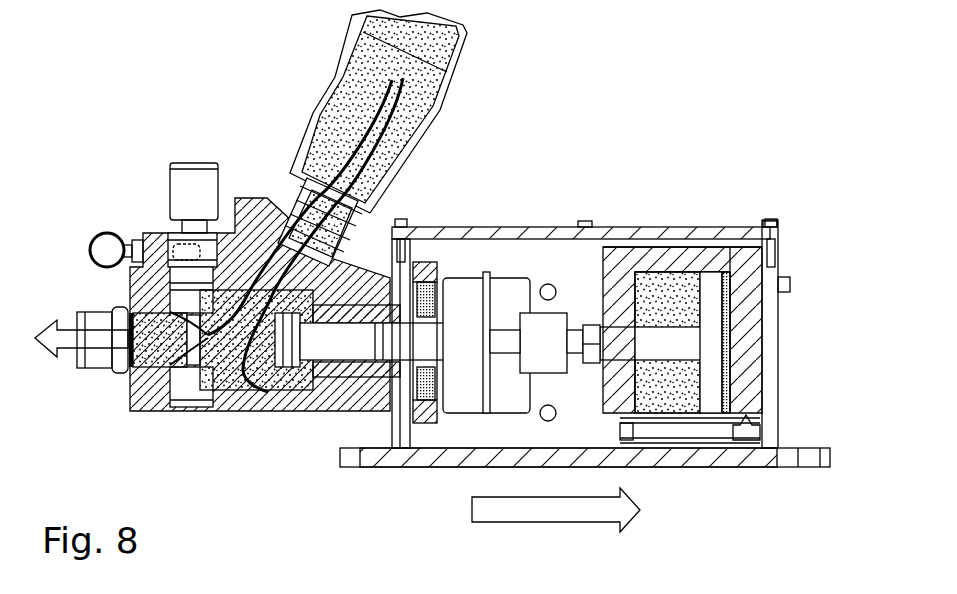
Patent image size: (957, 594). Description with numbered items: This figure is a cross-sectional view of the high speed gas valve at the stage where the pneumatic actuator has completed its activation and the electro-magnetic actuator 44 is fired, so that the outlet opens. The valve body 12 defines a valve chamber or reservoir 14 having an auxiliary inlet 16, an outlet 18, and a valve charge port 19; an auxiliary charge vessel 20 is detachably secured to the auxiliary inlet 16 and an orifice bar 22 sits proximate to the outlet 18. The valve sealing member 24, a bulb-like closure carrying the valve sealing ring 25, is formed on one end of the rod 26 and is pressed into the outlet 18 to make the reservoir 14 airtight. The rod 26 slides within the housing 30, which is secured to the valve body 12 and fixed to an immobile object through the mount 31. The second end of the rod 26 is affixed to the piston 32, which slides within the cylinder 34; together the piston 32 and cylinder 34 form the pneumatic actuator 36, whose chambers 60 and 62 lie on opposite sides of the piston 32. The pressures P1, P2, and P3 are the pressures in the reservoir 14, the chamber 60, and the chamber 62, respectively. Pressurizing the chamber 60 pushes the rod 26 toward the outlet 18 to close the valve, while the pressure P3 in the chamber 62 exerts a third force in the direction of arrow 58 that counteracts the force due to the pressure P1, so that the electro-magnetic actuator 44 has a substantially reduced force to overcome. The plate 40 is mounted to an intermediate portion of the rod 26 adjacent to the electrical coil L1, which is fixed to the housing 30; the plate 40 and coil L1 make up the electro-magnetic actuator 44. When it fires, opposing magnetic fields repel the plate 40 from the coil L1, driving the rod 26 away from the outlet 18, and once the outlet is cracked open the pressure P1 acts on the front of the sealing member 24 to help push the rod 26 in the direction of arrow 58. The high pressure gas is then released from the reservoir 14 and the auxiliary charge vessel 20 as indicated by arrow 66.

The valve body 12 is at (372, 225).
The valve chamber 14 is at (275, 405).
The auxiliary inlet 16 is at (268, 218).
The outlet 18 is at (158, 285).
The valve charge port 19 is at (285, 405).
The auxiliary charge vessel 20 is at (335, 72).
The orifice bar 22 is at (200, 175).
The valve sealing member 24 is at (330, 372).
The valve sealing ring 25 is at (200, 275).
The rod 26 is at (627, 340).
The housing 30 is at (547, 227).
The mount 31 is at (783, 470).
The piston 32 is at (708, 392).
The cylinder 34 is at (747, 352).
The pneumatic actuator 36 is at (733, 230).
The plate 40 is at (450, 383).
The electro-magnetic actuator 44 is at (460, 258).
The direction arrow 58 is at (561, 523).
The chamber 60 is at (747, 324).
The chamber 62 is at (657, 274).
The gas release arrow 66 is at (57, 328).
The reservoir pressure P1 is at (242, 410).
The chamber pressure P2 is at (735, 302).
The chamber pressure P3 is at (648, 277).
The electrical coil L1 is at (455, 387).